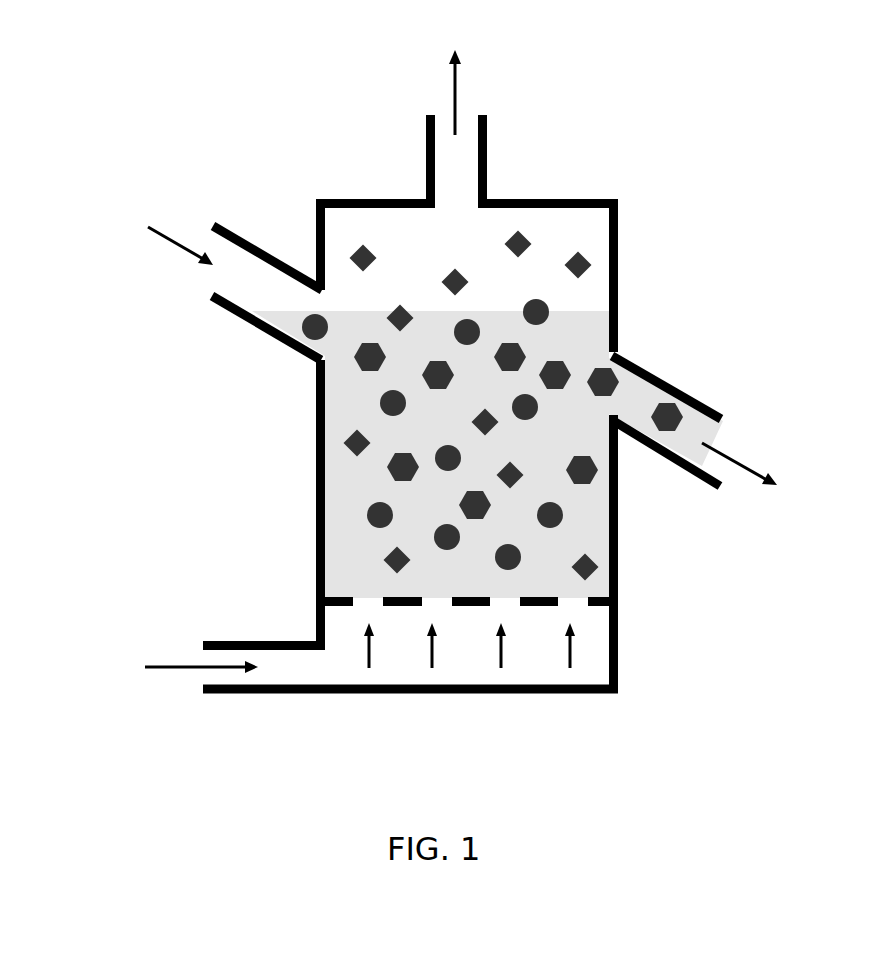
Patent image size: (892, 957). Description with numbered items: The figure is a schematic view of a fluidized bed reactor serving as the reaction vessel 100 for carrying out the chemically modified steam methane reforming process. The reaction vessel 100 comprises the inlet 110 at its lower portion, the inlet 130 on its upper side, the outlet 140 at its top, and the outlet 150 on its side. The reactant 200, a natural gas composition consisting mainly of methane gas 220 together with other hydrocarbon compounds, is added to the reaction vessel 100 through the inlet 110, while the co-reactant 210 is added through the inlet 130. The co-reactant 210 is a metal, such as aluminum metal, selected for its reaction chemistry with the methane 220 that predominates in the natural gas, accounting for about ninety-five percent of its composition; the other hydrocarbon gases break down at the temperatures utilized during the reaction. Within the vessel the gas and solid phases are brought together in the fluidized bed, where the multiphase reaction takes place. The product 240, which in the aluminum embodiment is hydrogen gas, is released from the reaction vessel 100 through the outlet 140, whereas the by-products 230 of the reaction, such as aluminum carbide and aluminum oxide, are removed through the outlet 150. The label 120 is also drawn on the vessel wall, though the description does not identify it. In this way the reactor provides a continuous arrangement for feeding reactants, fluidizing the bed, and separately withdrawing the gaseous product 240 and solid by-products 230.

The reaction vessel 100 is at (437, 384).
The inlet 110 is at (242, 693).
The reactor vessel 120 is at (519, 404).
The inlet 130 is at (225, 305).
The outlet 140 is at (487, 142).
The outlet 150 is at (708, 421).
The reactant 200 is at (164, 668).
The co-reactant 210 is at (377, 515).
The methane gas 220 is at (353, 445).
The by-products 230 is at (667, 405).
The product 240 is at (458, 73).